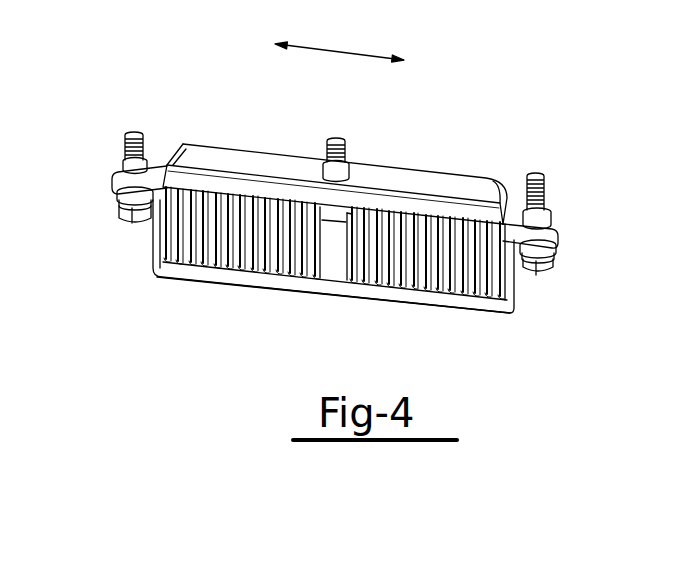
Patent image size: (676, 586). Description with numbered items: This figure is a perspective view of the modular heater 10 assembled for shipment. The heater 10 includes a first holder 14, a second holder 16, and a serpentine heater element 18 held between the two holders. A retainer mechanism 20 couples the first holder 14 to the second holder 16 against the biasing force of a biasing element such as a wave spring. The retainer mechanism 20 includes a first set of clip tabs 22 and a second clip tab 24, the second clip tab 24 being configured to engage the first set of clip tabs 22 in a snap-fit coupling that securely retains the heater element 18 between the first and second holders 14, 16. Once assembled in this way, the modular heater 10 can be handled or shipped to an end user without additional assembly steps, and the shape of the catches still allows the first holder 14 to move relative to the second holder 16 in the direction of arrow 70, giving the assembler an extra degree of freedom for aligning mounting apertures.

The heater 10 is at (166, 90).
The first holder 14 is at (197, 133).
The second holder 16 is at (482, 322).
The serpentine heater element 18 is at (403, 290).
The retainer mechanism 20 is at (351, 207).
The first set of clip tabs 22 is at (332, 220).
The second clip tab 24 is at (332, 270).
The arrow 70 is at (340, 50).